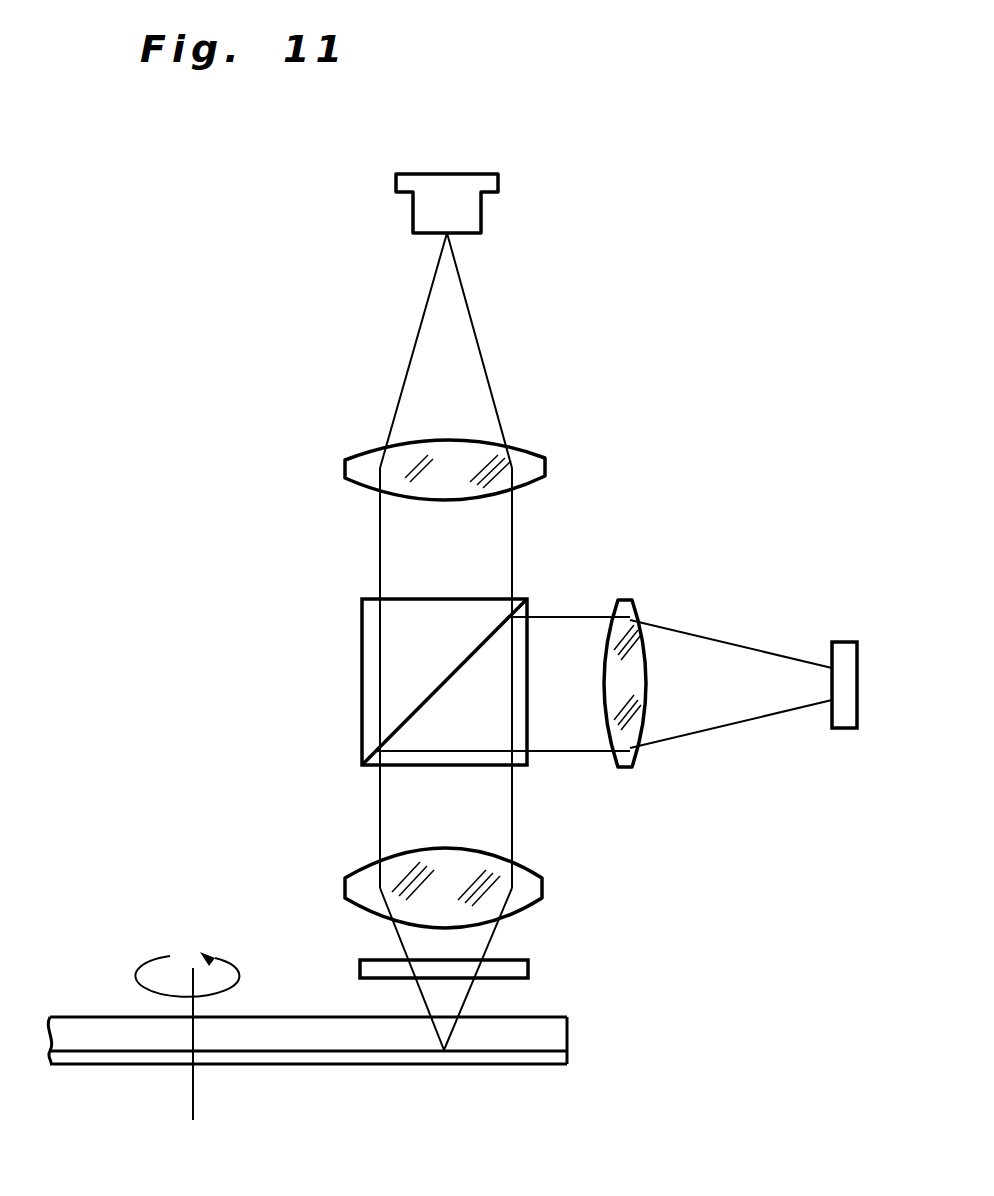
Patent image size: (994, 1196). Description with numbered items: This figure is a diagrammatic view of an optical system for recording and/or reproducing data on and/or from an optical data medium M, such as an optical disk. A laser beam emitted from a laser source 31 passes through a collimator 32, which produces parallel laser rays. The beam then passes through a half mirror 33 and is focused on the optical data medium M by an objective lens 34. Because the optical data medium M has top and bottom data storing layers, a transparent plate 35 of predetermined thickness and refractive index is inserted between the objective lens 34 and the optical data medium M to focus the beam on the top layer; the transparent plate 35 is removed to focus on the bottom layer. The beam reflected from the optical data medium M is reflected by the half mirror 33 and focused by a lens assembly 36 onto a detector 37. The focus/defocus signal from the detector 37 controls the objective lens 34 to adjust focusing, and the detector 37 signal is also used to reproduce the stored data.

The laser source 31 is at (483, 207).
The collimator 32 is at (545, 462).
The half mirror 33 is at (425, 700).
The objective lens 34 is at (352, 875).
The transparent plate 35 is at (360, 965).
The lens assembly 36 is at (633, 605).
The detector 37 is at (848, 642).
The optical data medium M is at (528, 1010).